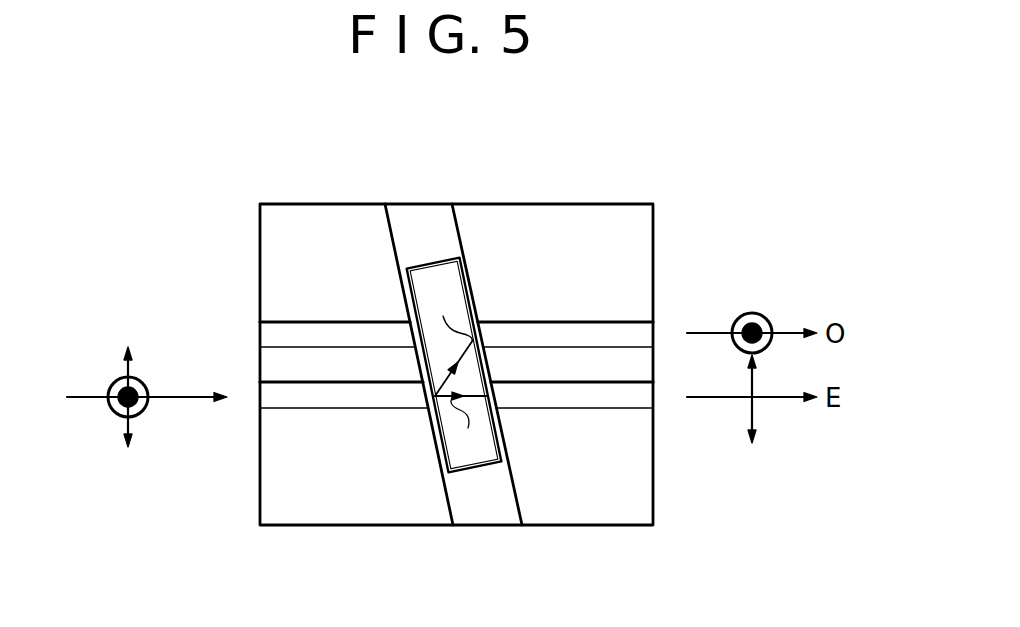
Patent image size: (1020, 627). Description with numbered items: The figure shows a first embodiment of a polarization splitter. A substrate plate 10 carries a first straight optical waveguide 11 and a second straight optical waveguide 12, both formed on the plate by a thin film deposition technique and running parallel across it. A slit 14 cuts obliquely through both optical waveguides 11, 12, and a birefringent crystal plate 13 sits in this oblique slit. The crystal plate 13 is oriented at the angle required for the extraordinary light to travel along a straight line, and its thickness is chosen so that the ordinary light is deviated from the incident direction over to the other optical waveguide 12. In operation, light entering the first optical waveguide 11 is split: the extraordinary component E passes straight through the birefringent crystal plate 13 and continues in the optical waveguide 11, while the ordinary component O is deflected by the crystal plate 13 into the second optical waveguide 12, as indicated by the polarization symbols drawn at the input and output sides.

The substrate plate 10 is at (650, 518).
The first straight optical waveguide 11 is at (543, 403).
The second straight optical waveguide 12 is at (518, 327).
The birefringent crystal plate 13 is at (435, 272).
The slit 14 is at (455, 510).